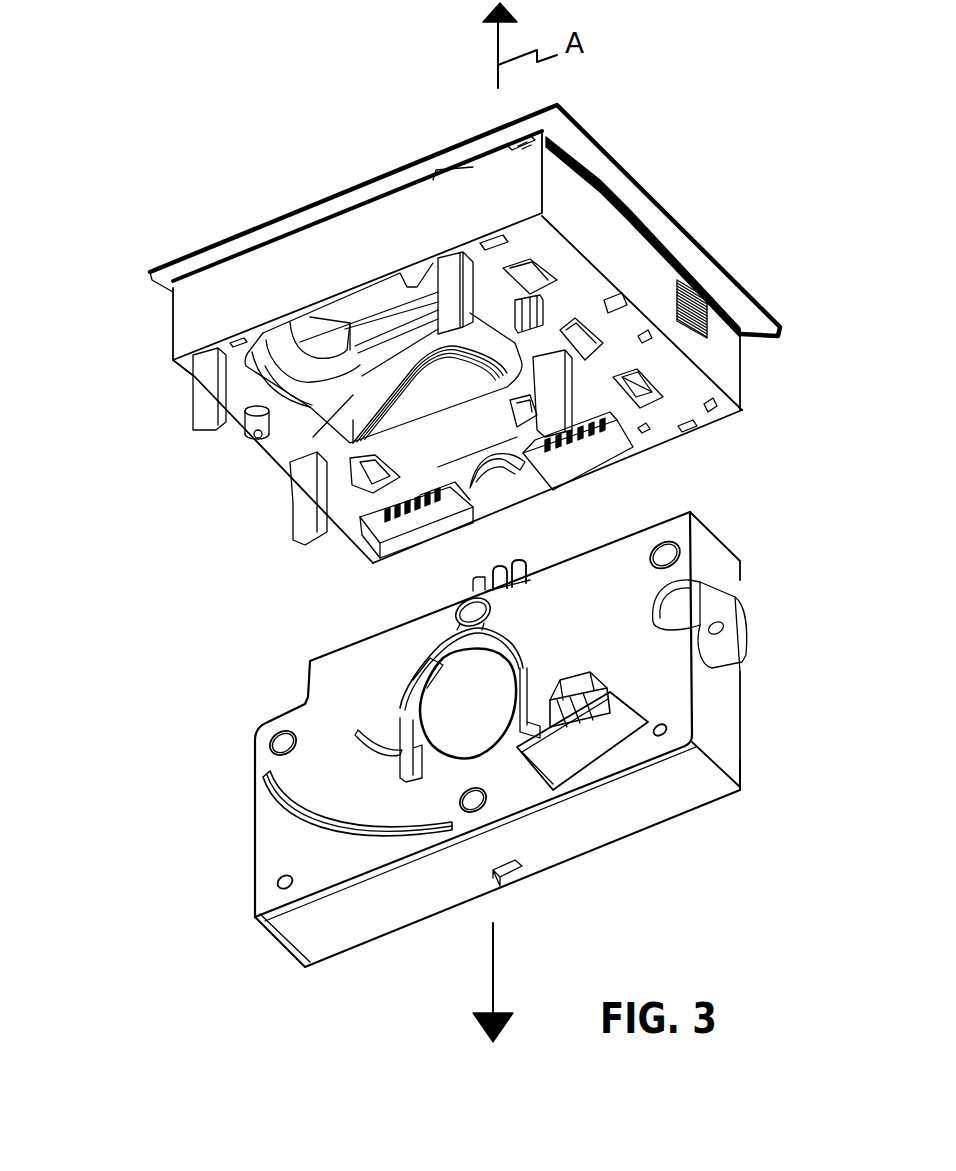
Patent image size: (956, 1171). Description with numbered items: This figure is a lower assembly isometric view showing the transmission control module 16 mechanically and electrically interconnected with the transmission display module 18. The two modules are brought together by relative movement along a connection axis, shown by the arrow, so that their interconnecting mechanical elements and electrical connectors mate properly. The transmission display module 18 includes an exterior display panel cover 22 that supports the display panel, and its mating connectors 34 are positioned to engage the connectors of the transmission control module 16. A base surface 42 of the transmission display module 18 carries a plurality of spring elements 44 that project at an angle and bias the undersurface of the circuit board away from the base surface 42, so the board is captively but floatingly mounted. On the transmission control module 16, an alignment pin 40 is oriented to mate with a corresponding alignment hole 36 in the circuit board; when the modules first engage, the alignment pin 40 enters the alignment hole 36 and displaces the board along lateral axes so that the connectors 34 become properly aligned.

The transmission control module 16 is at (727, 735).
The transmission display module 18 is at (172, 324).
The exterior display panel cover 22 is at (660, 200).
The mating connectors 34 is at (415, 555).
The alignment hole 36 is at (522, 468).
The alignment pin 40 is at (513, 572).
The base surface 42 is at (275, 442).
The spring elements 44 is at (585, 332).